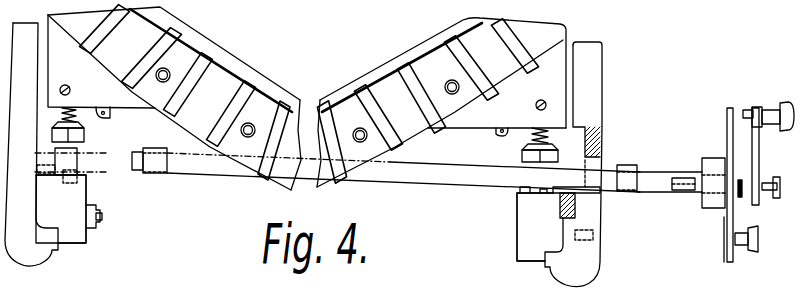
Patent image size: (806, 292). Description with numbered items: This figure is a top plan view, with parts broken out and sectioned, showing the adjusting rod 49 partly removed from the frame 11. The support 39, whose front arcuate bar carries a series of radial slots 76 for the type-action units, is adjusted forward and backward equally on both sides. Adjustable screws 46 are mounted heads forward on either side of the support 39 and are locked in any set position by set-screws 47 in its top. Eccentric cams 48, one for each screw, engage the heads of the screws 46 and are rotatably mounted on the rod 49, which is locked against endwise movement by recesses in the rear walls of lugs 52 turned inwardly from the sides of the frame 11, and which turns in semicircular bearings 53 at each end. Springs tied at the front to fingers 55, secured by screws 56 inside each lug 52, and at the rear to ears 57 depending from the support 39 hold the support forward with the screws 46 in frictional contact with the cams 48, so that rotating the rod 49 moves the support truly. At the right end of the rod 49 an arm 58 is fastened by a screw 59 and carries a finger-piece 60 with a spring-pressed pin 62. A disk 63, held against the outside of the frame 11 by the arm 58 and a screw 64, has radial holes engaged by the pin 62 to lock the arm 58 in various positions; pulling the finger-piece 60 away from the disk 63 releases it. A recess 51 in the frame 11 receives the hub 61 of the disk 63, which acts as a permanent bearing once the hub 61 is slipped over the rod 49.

The frame 11 is at (43, 255).
The support 39 is at (267, 83).
The radial slots 76 is at (428, 114).
The adjustable screws 46 is at (84, 134).
The set-screws 47 is at (70, 89).
The eccentric cams 48 is at (168, 168).
The rod 49 is at (428, 183).
The recess 51 is at (597, 206).
The lugs 52 is at (86, 240).
The semicircular bearings 53 is at (606, 202).
The fingers 55 is at (100, 206).
The screws 56 is at (102, 218).
The ears 57 is at (110, 114).
The arm 58 is at (759, 148).
The screw 59 is at (767, 196).
The finger-piece 60 is at (784, 103).
The hub 61 is at (712, 158).
The pin 62 is at (593, 237).
The disk 63 is at (730, 262).
The screw 64 is at (753, 248).